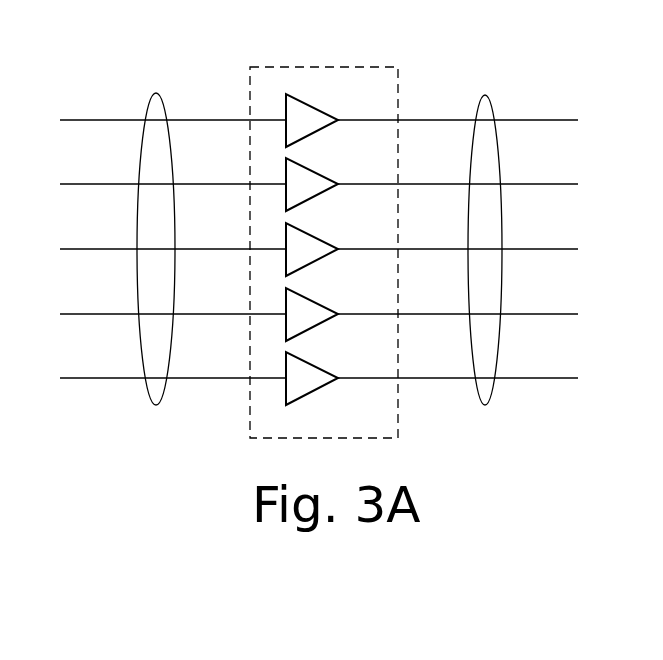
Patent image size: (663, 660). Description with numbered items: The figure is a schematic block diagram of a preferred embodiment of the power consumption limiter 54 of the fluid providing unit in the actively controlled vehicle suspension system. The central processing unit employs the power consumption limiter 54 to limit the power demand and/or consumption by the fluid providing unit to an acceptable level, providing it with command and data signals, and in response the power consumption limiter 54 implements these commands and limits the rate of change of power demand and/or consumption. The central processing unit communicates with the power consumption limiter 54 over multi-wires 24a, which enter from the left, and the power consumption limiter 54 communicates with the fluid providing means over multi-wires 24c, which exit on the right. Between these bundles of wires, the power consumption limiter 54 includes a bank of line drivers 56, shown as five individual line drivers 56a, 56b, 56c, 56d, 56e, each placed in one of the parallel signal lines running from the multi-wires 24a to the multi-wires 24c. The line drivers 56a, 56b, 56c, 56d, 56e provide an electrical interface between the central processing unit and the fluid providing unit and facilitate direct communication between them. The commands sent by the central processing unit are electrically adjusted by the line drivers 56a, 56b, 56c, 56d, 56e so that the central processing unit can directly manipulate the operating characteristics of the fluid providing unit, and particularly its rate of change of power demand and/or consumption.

The power consumption limiter 54 is at (460, 47).
The multi-wires 24a is at (150, 100).
The multi-wires 24c is at (495, 110).
The line drivers 56 is at (302, 67).
The line driver 56a is at (303, 112).
The line driver 56b is at (304, 176).
The line driver 56c is at (310, 240).
The line driver 56d is at (313, 305).
The line driver 56e is at (313, 369).